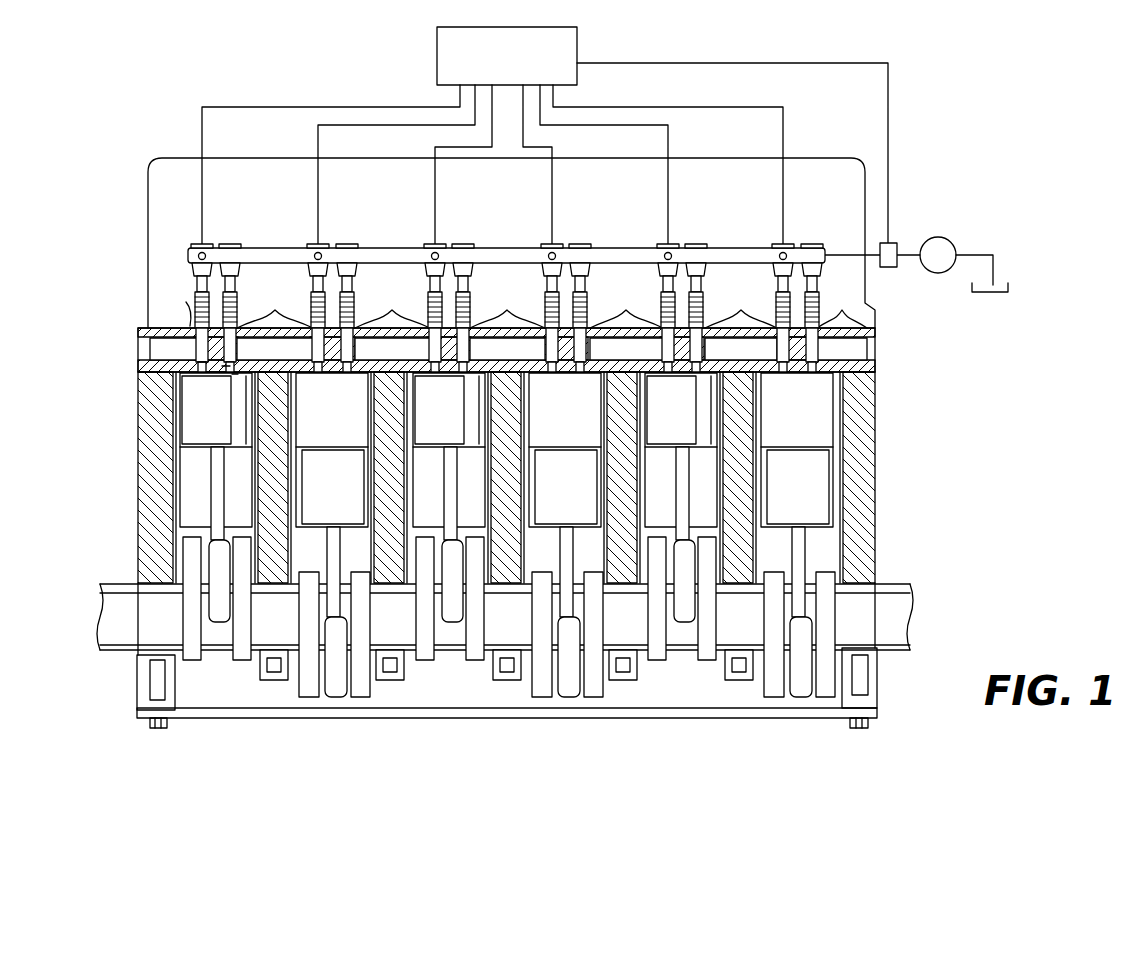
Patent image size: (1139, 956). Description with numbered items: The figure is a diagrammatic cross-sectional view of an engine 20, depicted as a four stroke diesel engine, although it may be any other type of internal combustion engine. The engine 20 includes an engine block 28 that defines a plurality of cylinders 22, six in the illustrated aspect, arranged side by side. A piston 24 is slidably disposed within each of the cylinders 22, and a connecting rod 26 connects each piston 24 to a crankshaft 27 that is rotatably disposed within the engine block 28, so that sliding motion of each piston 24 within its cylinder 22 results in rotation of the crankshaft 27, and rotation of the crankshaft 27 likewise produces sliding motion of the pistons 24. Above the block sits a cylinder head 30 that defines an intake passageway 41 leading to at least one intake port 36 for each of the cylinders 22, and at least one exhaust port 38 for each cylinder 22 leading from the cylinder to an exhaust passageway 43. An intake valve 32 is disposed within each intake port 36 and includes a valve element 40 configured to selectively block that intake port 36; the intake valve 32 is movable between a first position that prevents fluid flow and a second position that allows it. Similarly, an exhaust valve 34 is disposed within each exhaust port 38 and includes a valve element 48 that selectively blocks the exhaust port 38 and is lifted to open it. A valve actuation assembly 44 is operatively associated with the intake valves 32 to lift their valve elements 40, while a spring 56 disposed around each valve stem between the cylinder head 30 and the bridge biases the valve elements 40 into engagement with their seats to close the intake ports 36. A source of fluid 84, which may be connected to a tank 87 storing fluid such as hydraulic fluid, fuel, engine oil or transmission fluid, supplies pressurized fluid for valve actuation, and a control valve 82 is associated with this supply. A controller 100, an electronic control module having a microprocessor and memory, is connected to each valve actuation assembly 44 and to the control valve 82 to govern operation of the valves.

The engine 20 is at (918, 153).
The cylinders 22 is at (227, 500).
The piston 24 is at (203, 447).
The connecting rod 26 is at (213, 512).
The crankshaft 27 is at (120, 628).
The engine block 28 is at (150, 385).
The cylinder head 30 is at (877, 349).
The intake valve 32 is at (507, 307).
The exhaust valve 34 is at (510, 307).
The intake port 36 is at (232, 373).
The exhaust port 38 is at (227, 368).
The valve element 40 is at (235, 375).
The intake passageway 41 is at (265, 359).
The exhaust passageway 43 is at (382, 359).
The valve actuation assembly 44 is at (227, 243).
The valve element 48 is at (202, 362).
The spring 56 is at (197, 292).
The control valve 82 is at (888, 268).
The source of fluid 84 is at (940, 238).
The tank 87 is at (1008, 283).
The controller 100 is at (497, 62).